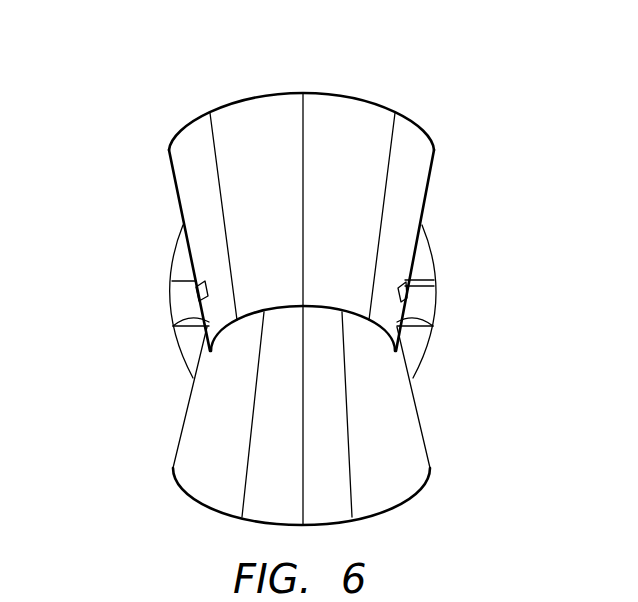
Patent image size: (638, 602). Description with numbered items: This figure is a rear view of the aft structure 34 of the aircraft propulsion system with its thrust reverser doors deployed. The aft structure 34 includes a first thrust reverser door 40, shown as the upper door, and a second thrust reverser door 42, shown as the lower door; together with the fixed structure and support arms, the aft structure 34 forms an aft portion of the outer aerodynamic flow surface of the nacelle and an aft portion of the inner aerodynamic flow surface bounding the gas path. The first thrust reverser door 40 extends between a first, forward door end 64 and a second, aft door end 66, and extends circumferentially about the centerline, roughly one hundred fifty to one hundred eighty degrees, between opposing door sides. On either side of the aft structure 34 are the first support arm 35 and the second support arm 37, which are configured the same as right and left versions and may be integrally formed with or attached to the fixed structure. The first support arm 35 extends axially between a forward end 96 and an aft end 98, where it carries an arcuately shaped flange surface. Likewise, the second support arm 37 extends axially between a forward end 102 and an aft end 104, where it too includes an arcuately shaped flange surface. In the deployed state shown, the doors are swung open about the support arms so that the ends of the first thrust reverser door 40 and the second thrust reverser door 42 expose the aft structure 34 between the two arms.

The aft structure 34 is at (120, 100).
The first door end 64 is at (325, 92).
The first thrust reverser door 40 is at (362, 132).
The second door end 66 is at (212, 340).
The second thrust reverser door 42 is at (417, 450).
The first support arm 35 is at (160, 308).
The forward end 96 is at (170, 294).
The aft end 98 is at (173, 327).
The second support arm 37 is at (446, 308).
The forward end 102 is at (437, 294).
The aft end 104 is at (432, 327).